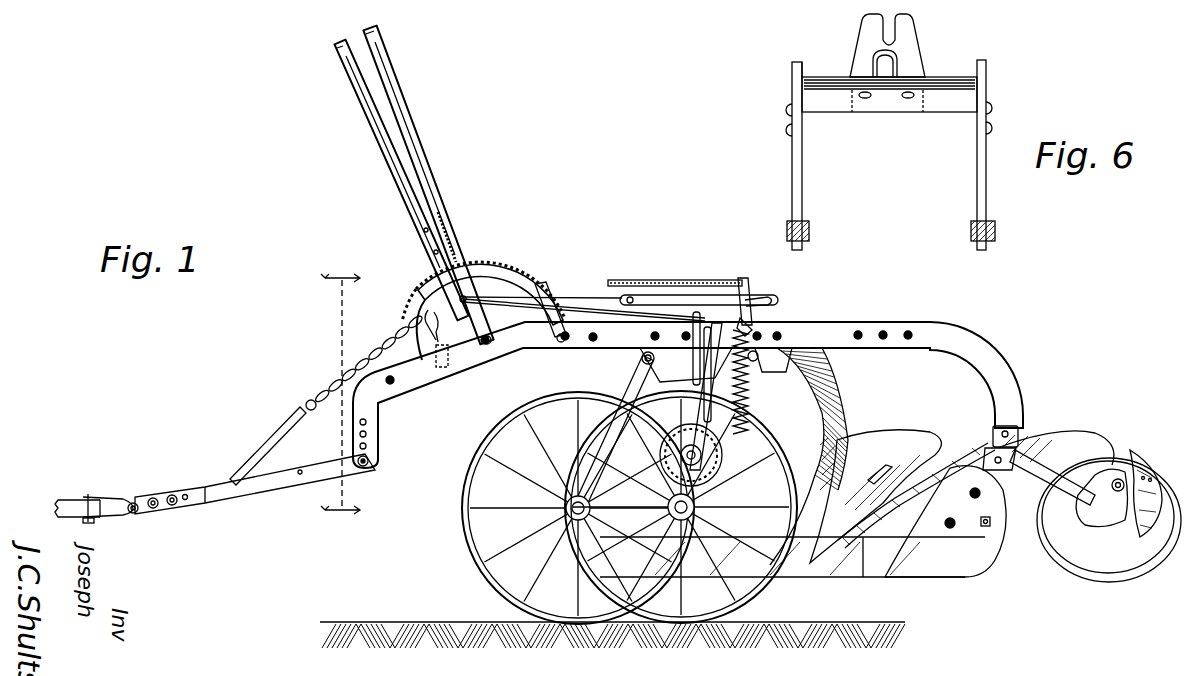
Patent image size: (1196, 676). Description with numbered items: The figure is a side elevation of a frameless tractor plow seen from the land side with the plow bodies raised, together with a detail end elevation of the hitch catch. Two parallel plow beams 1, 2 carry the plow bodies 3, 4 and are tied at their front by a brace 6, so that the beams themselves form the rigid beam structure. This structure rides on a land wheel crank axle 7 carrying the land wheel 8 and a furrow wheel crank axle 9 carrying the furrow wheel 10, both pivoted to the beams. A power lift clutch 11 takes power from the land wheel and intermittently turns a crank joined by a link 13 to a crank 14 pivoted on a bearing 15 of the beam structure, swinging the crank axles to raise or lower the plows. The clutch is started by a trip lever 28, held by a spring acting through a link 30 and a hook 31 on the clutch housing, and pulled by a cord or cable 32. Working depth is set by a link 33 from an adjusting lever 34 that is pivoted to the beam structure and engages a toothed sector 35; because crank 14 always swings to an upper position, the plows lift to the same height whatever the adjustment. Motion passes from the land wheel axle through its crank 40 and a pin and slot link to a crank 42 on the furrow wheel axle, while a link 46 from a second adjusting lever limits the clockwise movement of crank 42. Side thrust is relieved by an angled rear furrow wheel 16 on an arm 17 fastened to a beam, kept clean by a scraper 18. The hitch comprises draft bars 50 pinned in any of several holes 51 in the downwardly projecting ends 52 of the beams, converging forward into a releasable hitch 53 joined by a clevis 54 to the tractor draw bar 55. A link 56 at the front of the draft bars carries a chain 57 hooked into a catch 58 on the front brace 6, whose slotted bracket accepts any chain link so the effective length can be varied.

In FIG. 1, the plow beam 1 is at (845, 333).
In FIG. 6, the plow beam 1 is at (988, 76).
In FIG. 1, the plow beam 2 is at (848, 390).
In FIG. 6, the plow beam 2 is at (790, 74).
In FIG. 1, the plow body 3 is at (963, 470).
In FIG. 1, the plow body 4 is at (912, 446).
In FIG. 1, the front brace 6 is at (340, 396).
In FIG. 6, the front brace 6 is at (814, 78).
In FIG. 1, the land wheel crank axle 7 is at (752, 378).
In FIG. 1, the land wheel 8 is at (768, 588).
In FIG. 1, the furrow wheel crank axle 9 is at (615, 380).
In FIG. 1, the furrow wheel 10 is at (460, 520).
In FIG. 1, the clutch 11 is at (722, 457).
In FIG. 1, the link 13 is at (641, 362).
In FIG. 1, the crank 14 is at (642, 348).
In FIG. 1, the bearing 15 is at (676, 330).
In FIG. 1, the rear furrow wheel 16 is at (1110, 462).
In FIG. 1, the arm 17 is at (1040, 432).
In FIG. 1, the scraper 18 is at (1145, 466).
In FIG. 1, the trip lever 28 is at (750, 284).
In FIG. 1, the link 30 is at (770, 300).
In FIG. 1, the hook 31 is at (752, 440).
In FIG. 1, the cord or cable 32 is at (692, 282).
In FIG. 1, the link 33 is at (570, 300).
In FIG. 1, the adjusting lever 34 is at (422, 222).
In FIG. 1, the toothed sector 35 is at (492, 280).
In FIG. 1, the crank 40 is at (620, 302).
In FIG. 1, the crank 42 is at (768, 332).
In FIG. 1, the link 46 is at (500, 308).
In FIG. 1, the draft bars 50 is at (287, 478).
In FIG. 6, the draft bars 50 is at (809, 226).
In FIG. 1, the holes 51 is at (372, 456).
In FIG. 1, the downwardly projecting ends 52 is at (370, 423).
In FIG. 6, the downwardly projecting ends 52 is at (803, 192).
In FIG. 1, the releasable hitch 53 is at (163, 495).
In FIG. 1, the clevis 54 is at (107, 496).
In FIG. 1, the draw bar 55 is at (72, 503).
In FIG. 1, the link 56 is at (248, 440).
In FIG. 1, the chain 57 is at (326, 386).
In FIG. 1, the catch 58 is at (452, 354).
In FIG. 6, the catch 58 is at (910, 56).